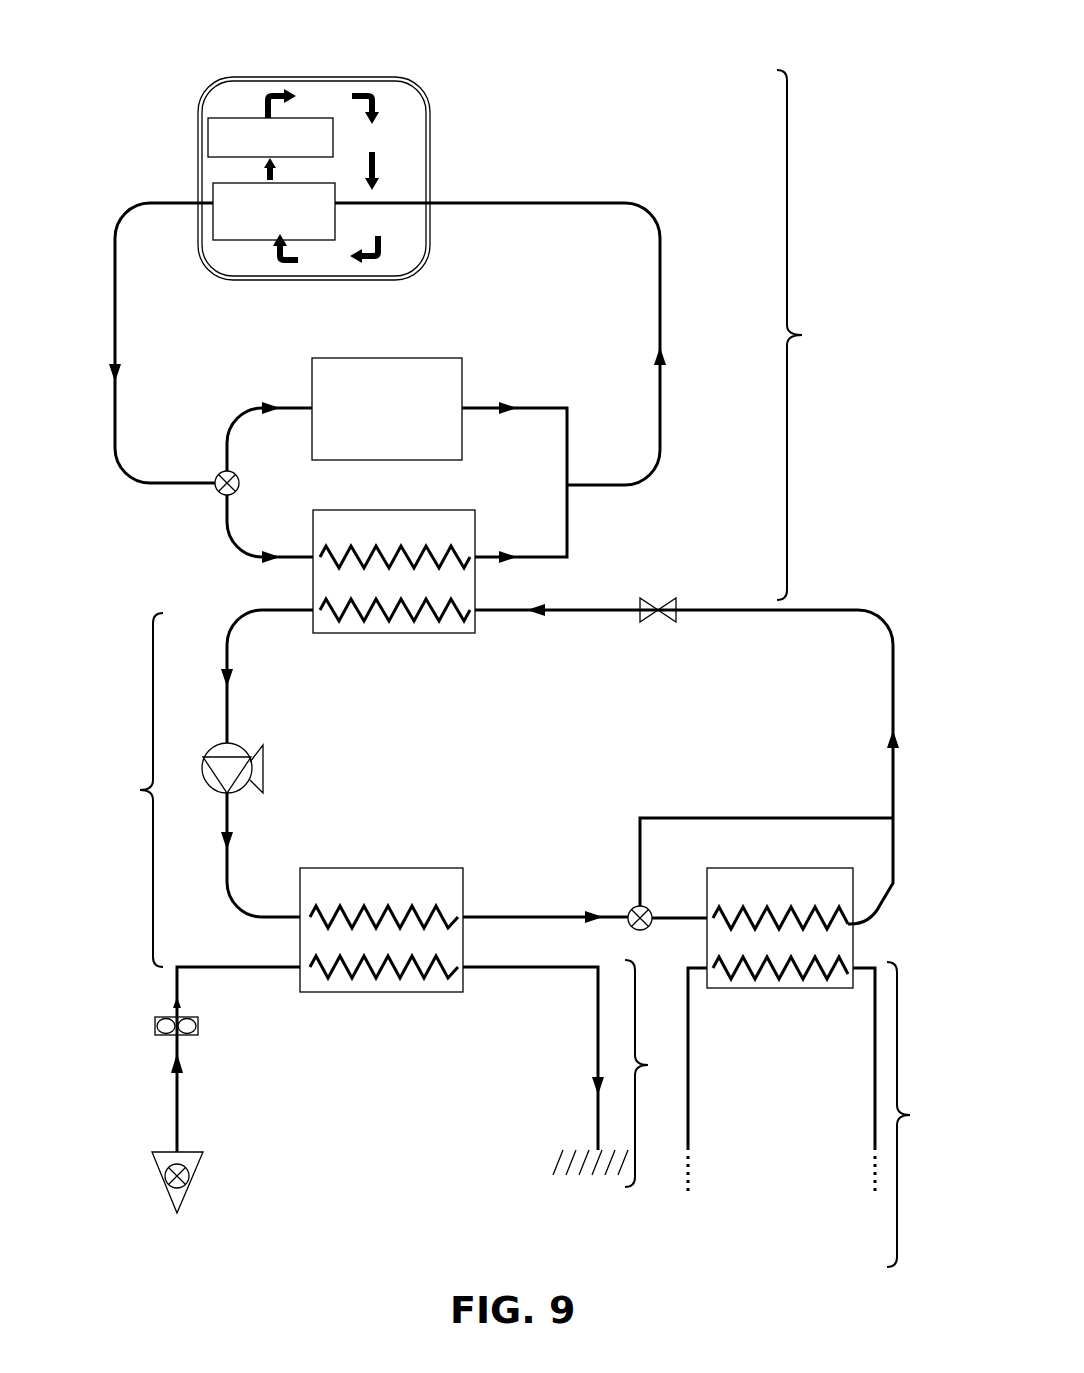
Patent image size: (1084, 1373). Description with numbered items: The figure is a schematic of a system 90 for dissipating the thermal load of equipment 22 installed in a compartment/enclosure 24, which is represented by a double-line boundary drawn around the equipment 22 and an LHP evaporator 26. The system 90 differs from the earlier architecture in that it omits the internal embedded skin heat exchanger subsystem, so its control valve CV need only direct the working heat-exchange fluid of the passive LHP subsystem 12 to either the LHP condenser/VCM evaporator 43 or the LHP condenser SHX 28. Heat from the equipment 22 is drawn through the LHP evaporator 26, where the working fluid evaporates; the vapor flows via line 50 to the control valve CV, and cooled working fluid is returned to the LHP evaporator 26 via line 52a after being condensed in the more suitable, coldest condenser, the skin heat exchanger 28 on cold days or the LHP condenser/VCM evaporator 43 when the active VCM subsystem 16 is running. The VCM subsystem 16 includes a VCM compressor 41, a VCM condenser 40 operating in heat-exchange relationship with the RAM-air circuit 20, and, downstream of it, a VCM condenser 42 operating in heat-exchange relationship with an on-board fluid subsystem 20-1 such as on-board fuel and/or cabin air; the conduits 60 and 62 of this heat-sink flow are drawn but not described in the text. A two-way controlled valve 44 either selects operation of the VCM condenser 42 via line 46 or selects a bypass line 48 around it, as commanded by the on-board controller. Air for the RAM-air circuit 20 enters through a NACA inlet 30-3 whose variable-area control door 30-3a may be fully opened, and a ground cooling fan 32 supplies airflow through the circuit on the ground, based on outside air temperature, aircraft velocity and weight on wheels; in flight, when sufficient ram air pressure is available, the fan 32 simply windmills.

The LHP subsystem 12 is at (812, 335).
The VCM subsystem 16 is at (125, 790).
The RAM-air circuit 20 is at (572, 1073).
The on-board fluid subsystem 20-1 is at (926, 1114).
The equipment 22 is at (228, 118).
The compartment/enclosure 24 is at (318, 78).
The LHP evaporator 26 is at (313, 243).
The LHP condenser SHX 28 is at (440, 358).
The NACA inlet 30-3 is at (153, 1164).
The control door 30-3a is at (187, 1178).
The ground cooling fan 32 is at (150, 1030).
The VCM condenser 40 is at (408, 868).
The VCM compressor 41 is at (262, 770).
The VCM condenser 42 is at (840, 878).
The LHP condenser/VCM evaporator 43 is at (475, 527).
The two-way controlled valve 44 is at (633, 909).
The line 46 is at (686, 927).
The bypass line 48 is at (730, 830).
The line 50 is at (126, 313).
The line 52a is at (540, 212).
The heat sink fluid inlet line 60 is at (672, 1101).
The heat sink fluid outlet line 62 is at (880, 1094).
The system 90 is at (684, 134).
The control valve CV is at (216, 491).